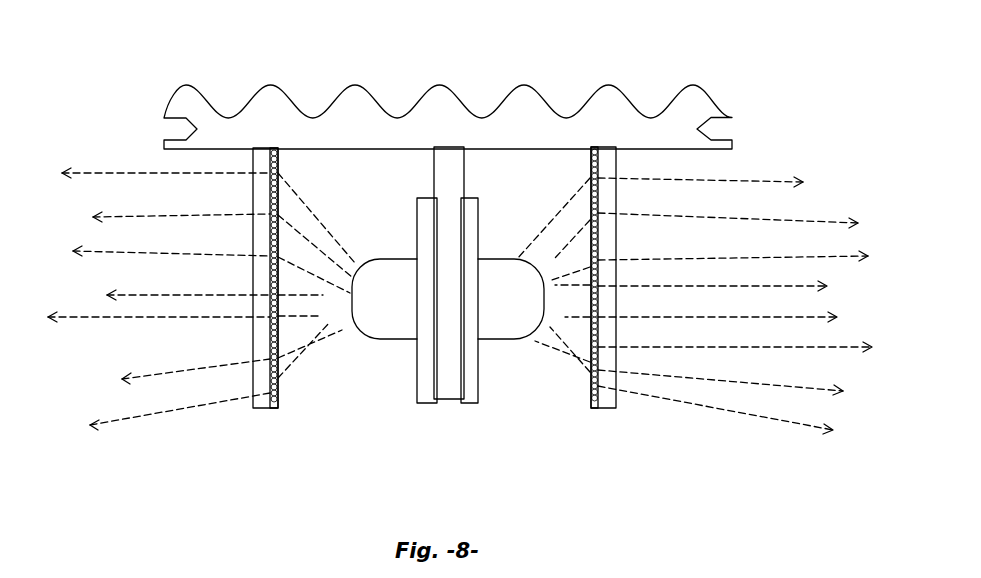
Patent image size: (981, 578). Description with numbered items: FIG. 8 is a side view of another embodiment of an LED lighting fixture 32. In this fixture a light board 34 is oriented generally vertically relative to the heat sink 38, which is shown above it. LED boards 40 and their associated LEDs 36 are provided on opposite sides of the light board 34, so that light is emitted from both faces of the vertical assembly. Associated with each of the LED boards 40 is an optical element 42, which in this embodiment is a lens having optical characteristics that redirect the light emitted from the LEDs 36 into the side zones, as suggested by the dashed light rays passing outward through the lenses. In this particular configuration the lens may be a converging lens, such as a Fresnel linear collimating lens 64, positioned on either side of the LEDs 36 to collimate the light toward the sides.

The LED lighting fixture 32 is at (795, 83).
The light board 34 is at (450, 172).
The LEDs 36 is at (395, 329).
The heat sink 38 is at (345, 120).
The LED boards 40 is at (417, 217).
The optical element 42 is at (253, 223).
The Fresnel linear collimating lens 64 is at (258, 410).